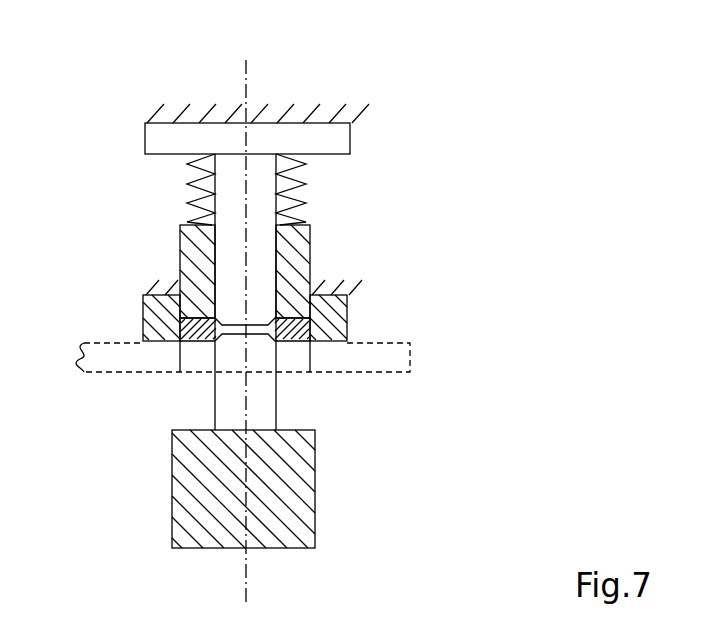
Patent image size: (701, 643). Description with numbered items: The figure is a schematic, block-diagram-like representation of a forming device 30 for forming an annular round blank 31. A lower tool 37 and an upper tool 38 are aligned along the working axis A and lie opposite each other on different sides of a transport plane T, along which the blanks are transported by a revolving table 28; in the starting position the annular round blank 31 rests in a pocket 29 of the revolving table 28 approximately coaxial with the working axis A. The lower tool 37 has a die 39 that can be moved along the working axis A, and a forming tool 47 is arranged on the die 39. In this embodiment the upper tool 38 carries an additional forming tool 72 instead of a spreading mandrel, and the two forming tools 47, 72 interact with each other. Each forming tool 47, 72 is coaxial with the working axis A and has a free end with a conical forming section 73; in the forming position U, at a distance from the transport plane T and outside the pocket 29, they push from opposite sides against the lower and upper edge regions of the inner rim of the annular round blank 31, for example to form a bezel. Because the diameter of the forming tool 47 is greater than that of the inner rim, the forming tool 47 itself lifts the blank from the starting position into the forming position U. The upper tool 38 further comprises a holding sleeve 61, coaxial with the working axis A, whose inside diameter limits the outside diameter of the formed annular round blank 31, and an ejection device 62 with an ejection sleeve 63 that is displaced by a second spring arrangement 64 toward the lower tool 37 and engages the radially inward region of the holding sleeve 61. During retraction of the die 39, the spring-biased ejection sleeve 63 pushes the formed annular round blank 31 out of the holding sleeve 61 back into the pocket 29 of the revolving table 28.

The forming device 30 is at (397, 77).
The working axis A is at (249, 82).
The additional forming tool 72 is at (235, 271).
The forming tool 47 is at (265, 410).
The ejection device 62 is at (315, 230).
The second spring arrangement 64 is at (316, 173).
The ejection sleeve 63 is at (308, 243).
The upper tool 38 is at (231, 297).
The holding sleeve 61 is at (147, 312).
The annular round blank 31 is at (231, 331).
The conical forming section 73 is at (224, 318).
The revolving table 28 is at (80, 372).
The pocket 29 is at (178, 362).
The transport plane T is at (394, 373).
The forming position U is at (294, 350).
The lower tool 37 is at (231, 489).
The die 39 is at (188, 483).